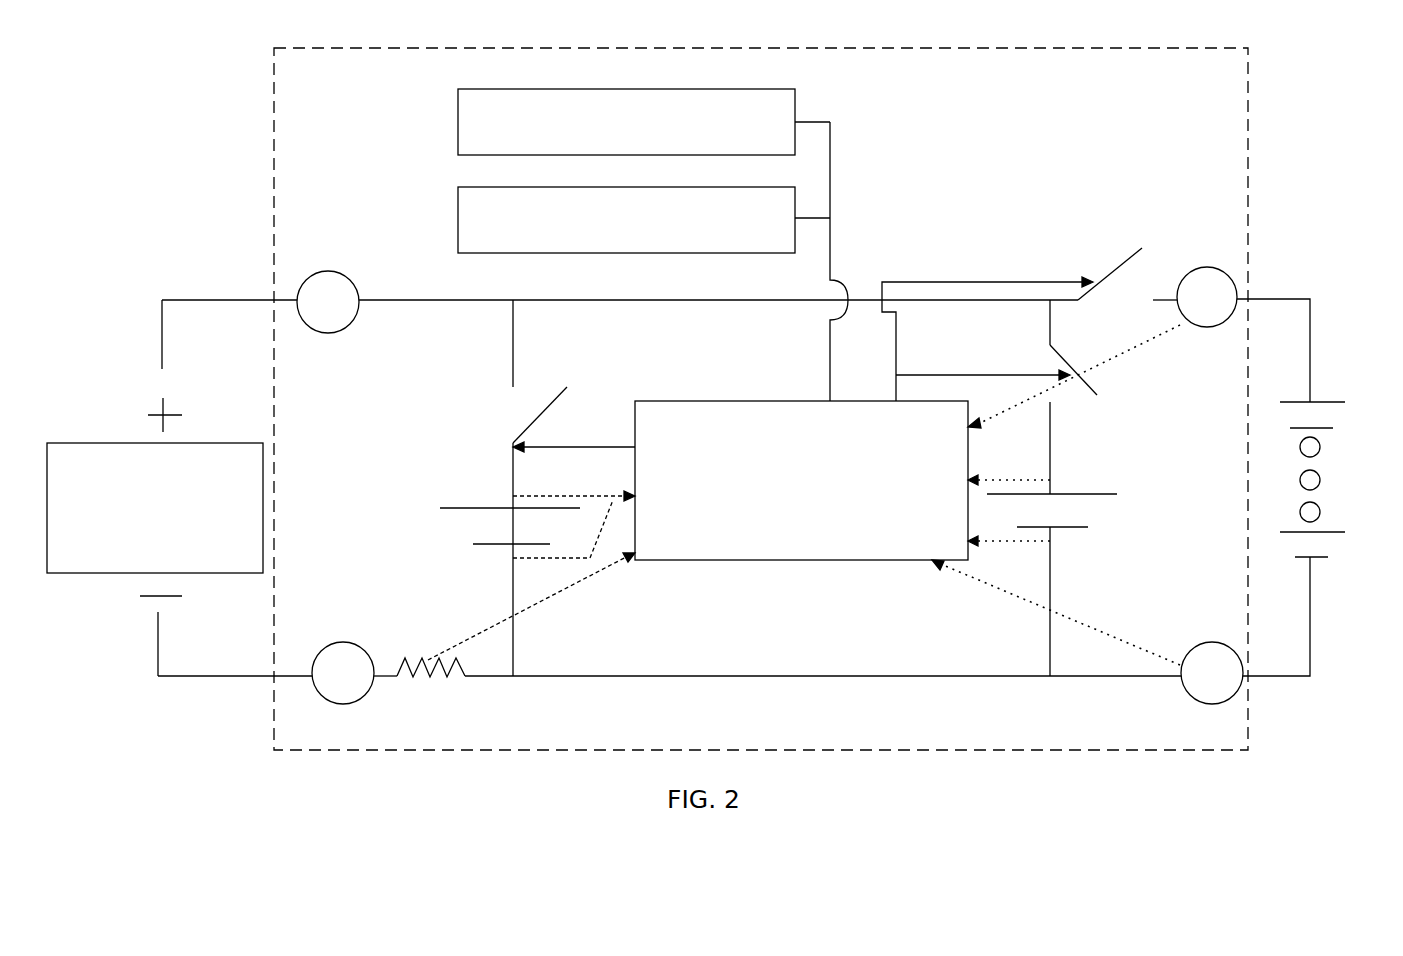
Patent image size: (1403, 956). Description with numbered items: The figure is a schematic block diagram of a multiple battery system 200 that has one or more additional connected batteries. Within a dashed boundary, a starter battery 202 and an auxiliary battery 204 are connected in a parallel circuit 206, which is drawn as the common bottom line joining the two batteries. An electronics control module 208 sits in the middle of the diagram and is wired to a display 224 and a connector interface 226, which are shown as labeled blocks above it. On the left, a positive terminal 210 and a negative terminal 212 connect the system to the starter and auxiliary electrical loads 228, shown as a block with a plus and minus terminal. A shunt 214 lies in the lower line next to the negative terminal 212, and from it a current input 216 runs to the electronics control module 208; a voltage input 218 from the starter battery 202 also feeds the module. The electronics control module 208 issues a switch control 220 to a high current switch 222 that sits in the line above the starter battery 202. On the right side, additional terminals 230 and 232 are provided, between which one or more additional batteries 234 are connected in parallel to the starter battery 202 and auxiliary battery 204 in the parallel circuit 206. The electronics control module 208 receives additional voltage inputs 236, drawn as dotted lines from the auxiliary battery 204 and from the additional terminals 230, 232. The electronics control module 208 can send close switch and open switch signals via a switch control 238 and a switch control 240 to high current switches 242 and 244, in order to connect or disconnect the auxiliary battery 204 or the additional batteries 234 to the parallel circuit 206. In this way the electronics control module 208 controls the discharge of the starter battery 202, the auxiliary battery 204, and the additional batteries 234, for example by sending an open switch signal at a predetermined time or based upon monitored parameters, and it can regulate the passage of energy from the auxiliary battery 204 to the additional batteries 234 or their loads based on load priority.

The multiple battery system 200 is at (273, 158).
The starter battery 202 is at (430, 526).
The auxiliary battery 204 is at (1100, 508).
The parallel circuit 206 is at (906, 678).
The electronics control module 208 is at (738, 401).
The positive terminal 210 is at (330, 334).
The negative terminal 212 is at (345, 642).
The shunt 214 is at (430, 680).
The current input 216 is at (566, 588).
The voltage input 218 is at (592, 482).
The switch control 220 is at (596, 446).
The high current switch 222 is at (552, 409).
The display 224 is at (458, 208).
The connector interface 226 is at (458, 114).
The starter and auxiliary electrical loads 228 is at (108, 442).
The additional terminal 230 is at (1206, 268).
The additional terminal 232 is at (1214, 643).
The additional batteries 234 is at (1326, 480).
The additional voltage inputs 236 is at (990, 424).
The switch control 238 is at (1042, 280).
The switch control 240 is at (984, 374).
The high current switch 242 is at (1120, 272).
The high current switch 244 is at (1078, 368).